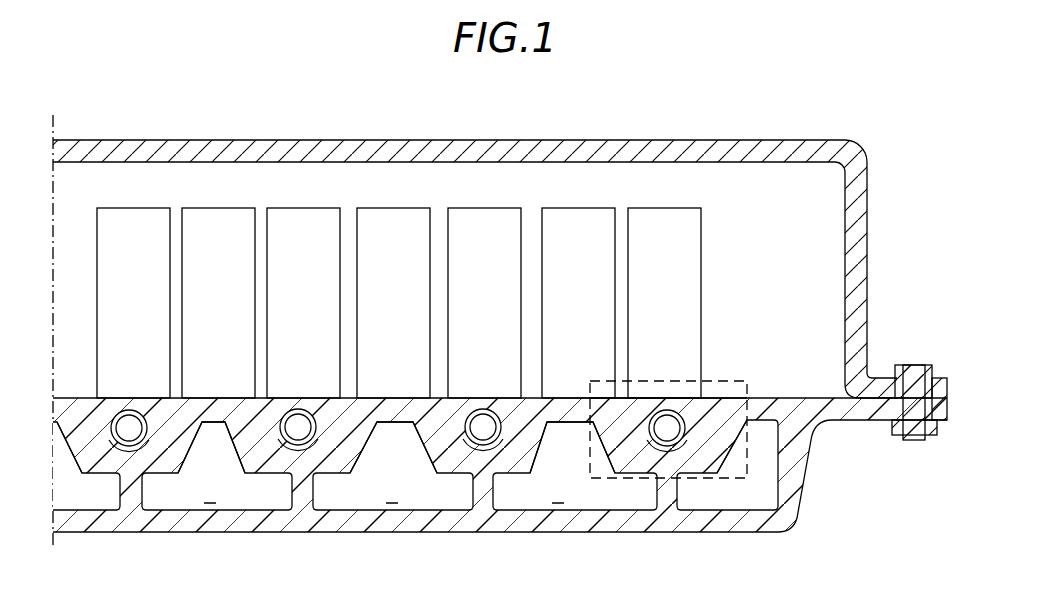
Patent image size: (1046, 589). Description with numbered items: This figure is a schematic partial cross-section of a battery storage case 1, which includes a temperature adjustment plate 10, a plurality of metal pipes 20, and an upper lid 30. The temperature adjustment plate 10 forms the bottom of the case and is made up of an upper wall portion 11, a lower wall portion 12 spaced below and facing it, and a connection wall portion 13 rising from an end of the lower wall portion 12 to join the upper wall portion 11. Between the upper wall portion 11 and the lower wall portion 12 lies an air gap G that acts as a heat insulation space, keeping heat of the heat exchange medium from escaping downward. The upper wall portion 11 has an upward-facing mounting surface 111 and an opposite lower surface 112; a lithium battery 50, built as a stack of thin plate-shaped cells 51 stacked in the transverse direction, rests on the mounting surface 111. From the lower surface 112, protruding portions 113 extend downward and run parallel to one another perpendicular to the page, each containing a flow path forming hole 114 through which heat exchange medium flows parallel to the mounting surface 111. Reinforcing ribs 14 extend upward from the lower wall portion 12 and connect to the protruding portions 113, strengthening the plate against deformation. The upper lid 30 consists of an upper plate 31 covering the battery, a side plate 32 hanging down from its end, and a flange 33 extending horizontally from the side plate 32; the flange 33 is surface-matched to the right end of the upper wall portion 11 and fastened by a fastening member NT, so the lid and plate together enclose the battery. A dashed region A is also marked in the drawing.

The battery storage case 1 is at (870, 123).
The temperature adjustment plate 10 is at (860, 490).
The upper wall portion 11 is at (77, 404).
The lower wall portion 12 is at (381, 530).
The connection wall portion 13 is at (816, 460).
The reinforcing ribs 14 is at (693, 490).
The metal pipes 20 is at (651, 440).
The upper lid 30 is at (421, 119).
The upper plate 31 is at (550, 148).
The side plate 32 is at (867, 258).
The flange 33 is at (896, 386).
The lithium battery 50 is at (717, 212).
The cells 51 is at (662, 222).
The mounting surface 111 is at (760, 393).
The lower surface 112 is at (392, 422).
The protruding portions 113 is at (350, 472).
The flow path forming hole 114 is at (652, 447).
The region A is at (734, 384).
The air gap G is at (383, 493).
The fastening member NT is at (908, 364).